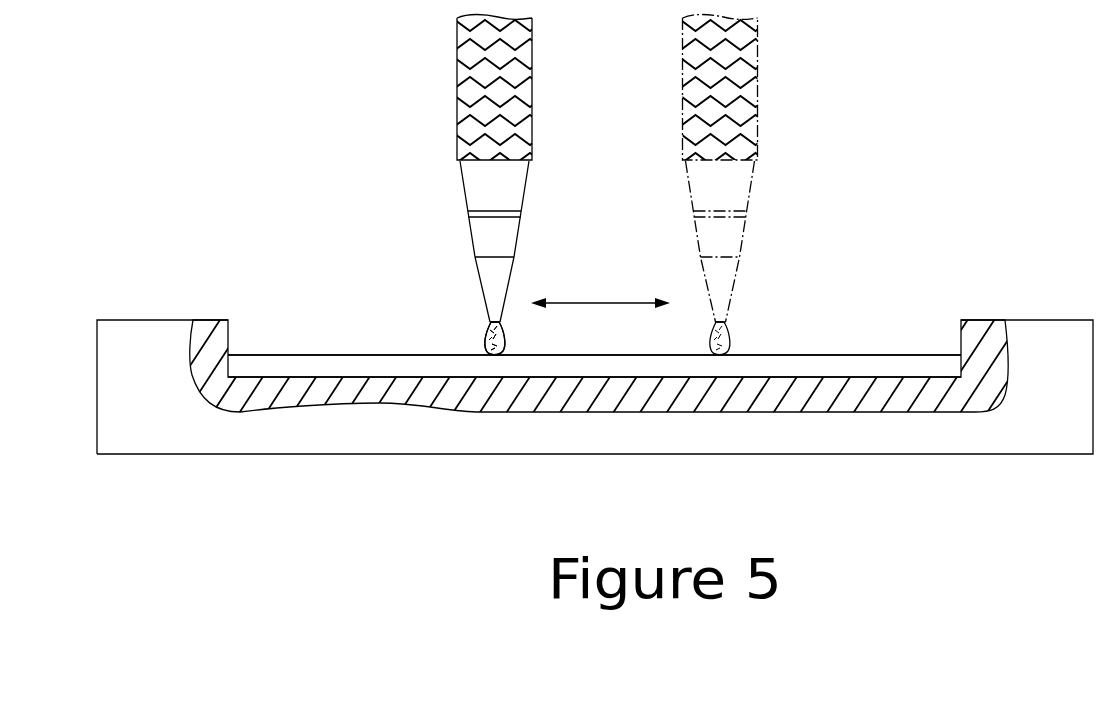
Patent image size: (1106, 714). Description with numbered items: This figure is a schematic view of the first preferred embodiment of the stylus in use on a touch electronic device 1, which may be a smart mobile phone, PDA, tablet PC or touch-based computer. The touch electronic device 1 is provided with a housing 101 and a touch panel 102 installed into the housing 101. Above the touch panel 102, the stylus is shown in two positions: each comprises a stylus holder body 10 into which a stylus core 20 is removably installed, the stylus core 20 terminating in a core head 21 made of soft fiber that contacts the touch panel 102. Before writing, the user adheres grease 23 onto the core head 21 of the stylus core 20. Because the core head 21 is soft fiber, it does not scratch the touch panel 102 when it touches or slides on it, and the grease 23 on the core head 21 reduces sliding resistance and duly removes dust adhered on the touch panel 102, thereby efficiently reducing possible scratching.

The touch electronic device 1 is at (123, 312).
The housing 101 is at (142, 437).
The touch panel 102 is at (265, 366).
The grease 23 is at (330, 352).
The stylus holder body 10 is at (449, 52).
The stylus core 20 is at (475, 340).
The core head 21 is at (500, 342).